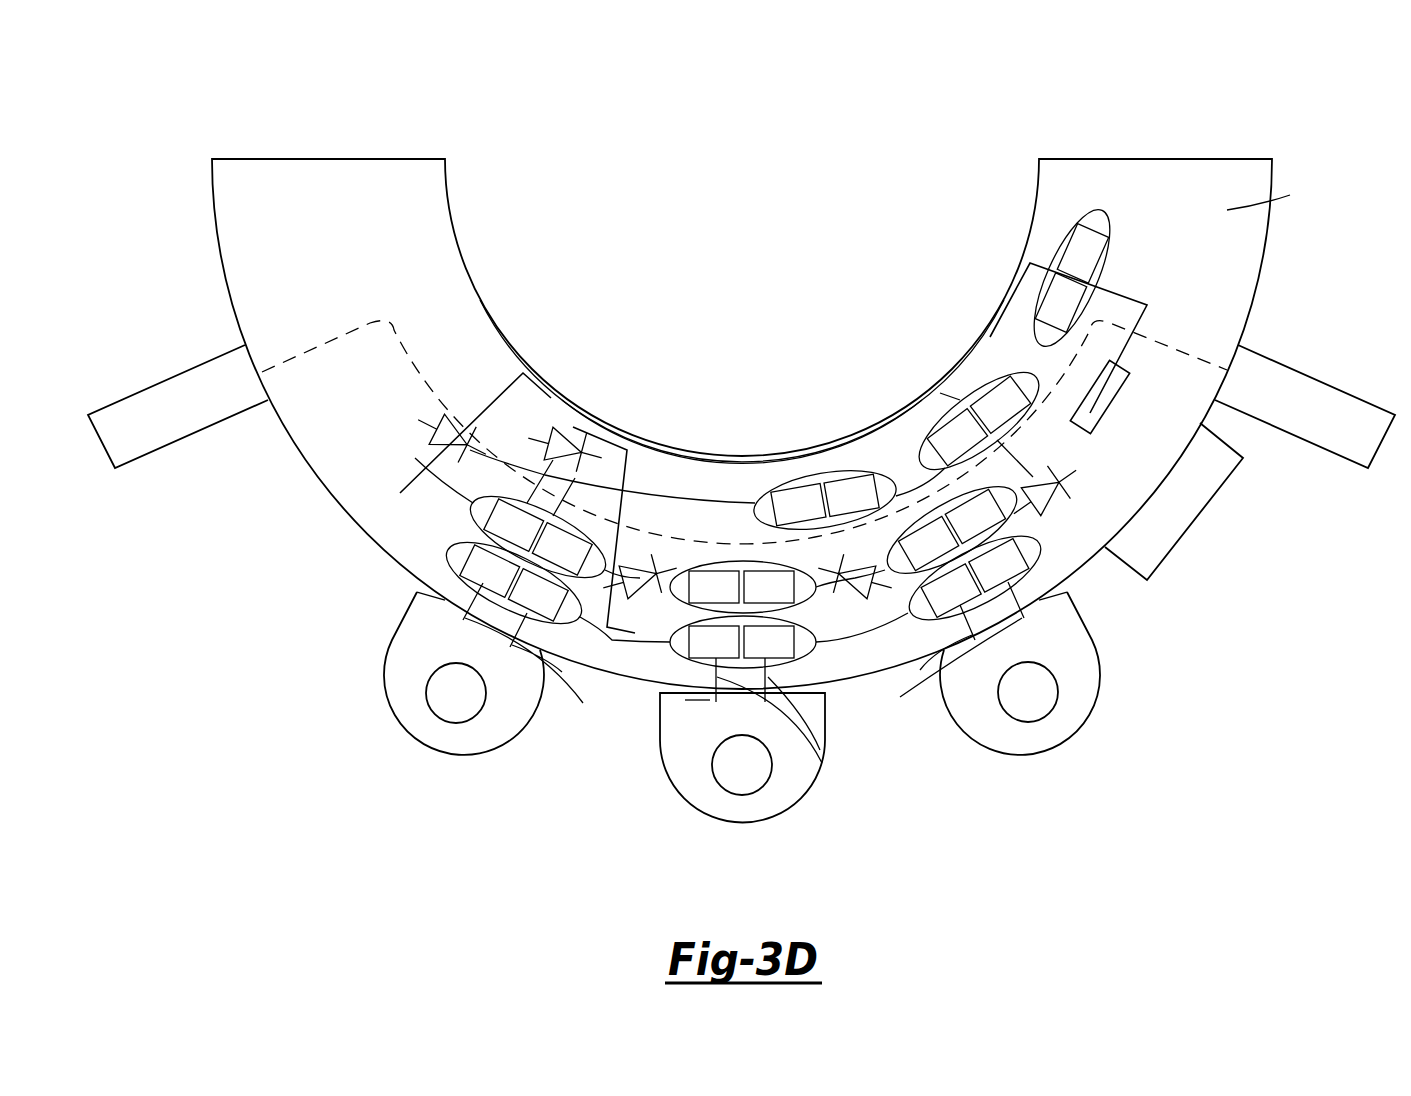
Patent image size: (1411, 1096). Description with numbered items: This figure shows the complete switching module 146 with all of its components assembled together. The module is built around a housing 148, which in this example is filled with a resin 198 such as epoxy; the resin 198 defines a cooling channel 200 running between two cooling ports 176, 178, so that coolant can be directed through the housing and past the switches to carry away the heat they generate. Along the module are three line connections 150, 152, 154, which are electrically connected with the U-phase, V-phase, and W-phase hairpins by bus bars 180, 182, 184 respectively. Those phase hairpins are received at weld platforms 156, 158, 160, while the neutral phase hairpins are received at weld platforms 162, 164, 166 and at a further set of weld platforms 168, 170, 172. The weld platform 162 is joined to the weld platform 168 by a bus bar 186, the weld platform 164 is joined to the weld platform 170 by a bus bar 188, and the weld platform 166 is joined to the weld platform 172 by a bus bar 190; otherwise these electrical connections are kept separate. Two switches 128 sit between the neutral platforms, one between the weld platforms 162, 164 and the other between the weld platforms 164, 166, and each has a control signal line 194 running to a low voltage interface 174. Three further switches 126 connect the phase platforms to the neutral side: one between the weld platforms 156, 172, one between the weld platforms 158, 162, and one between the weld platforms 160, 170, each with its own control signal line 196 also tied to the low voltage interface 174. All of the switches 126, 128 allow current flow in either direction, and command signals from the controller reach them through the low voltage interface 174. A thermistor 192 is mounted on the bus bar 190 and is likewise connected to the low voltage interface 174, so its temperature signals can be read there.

The switching module 146 is at (158, 128).
The housing 148 is at (1150, 158).
The resin 198 is at (1290, 195).
The weld platform 172 is at (1108, 245).
The cooling port 176 is at (175, 382).
The cooling port 178 is at (1315, 385).
The low voltage interface 174 is at (1192, 520).
The cooling channel 200 is at (350, 315).
The switch 128 is at (636, 618).
The weld platform 162 is at (438, 470).
The control signal line 194 is at (642, 520).
The control signal line 196 is at (452, 415).
The thermistor 192 is at (1108, 418).
The bus bar 190 is at (1125, 348).
The weld platform 168 is at (793, 488).
The weld platform 166 is at (920, 500).
The weld platform 164 is at (715, 560).
The weld platform 156 is at (580, 617).
The bus bar 186 is at (670, 476).
The bus bar 188 is at (842, 490).
The weld platform 170 is at (996, 438).
The weld platform 160 is at (1045, 572).
The line connection 150 is at (476, 690).
The line connection 152 is at (771, 799).
The line connection 154 is at (1001, 690).
The bus bar 180 is at (568, 700).
The bus bar 182 is at (822, 763).
The bus bar 184 is at (915, 690).
The weld platform 158 is at (675, 685).
The switch 126 is at (428, 412).